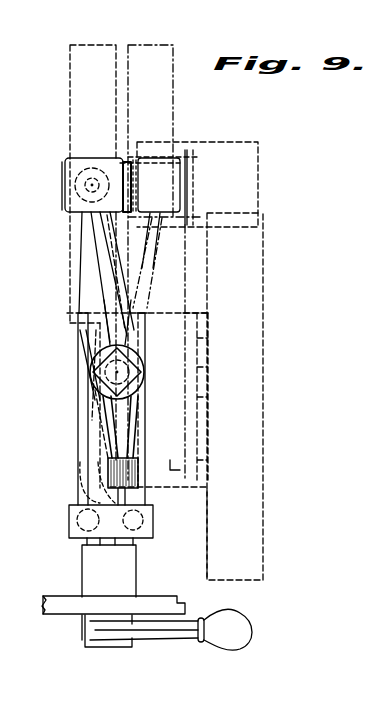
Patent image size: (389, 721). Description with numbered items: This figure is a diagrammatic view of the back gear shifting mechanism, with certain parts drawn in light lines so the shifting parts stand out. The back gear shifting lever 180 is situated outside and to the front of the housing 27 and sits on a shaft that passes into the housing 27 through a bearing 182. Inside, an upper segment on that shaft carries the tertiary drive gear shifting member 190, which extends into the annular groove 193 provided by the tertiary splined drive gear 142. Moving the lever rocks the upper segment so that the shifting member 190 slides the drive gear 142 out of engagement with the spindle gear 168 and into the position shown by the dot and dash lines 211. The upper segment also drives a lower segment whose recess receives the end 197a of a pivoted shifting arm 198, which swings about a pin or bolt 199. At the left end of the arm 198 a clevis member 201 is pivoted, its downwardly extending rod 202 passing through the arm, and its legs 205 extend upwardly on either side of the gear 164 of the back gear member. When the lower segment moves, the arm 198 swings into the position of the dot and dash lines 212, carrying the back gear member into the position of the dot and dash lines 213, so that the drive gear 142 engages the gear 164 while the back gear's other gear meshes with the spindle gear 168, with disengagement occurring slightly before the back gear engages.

The gear 164 is at (88, 60).
The dot and dash lines 213 is at (173, 66).
The legs 205 is at (125, 160).
The rod 202 is at (78, 185).
The clevis member 201 is at (68, 205).
The dot and dash lines 212 is at (143, 280).
The pivoted shifting arm 198 is at (138, 330).
The pin or bolt 199 is at (133, 372).
The annular groove 193 is at (138, 435).
The tertiary splined drive gear 142 is at (182, 470).
The spindle gear 168 is at (235, 550).
The dot and dash lines 211 is at (73, 375).
The tertiary drive gear shifting member 190 is at (112, 484).
The end 197a is at (68, 528).
The bearing 182 is at (122, 568).
The housing 27 is at (63, 605).
The back gear shifting lever 180 is at (233, 635).